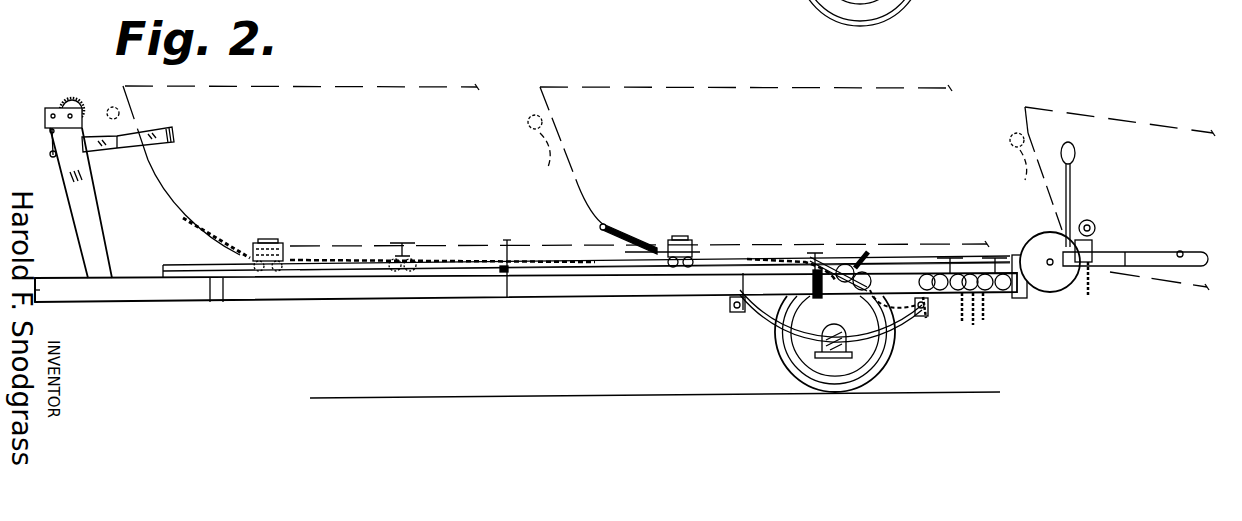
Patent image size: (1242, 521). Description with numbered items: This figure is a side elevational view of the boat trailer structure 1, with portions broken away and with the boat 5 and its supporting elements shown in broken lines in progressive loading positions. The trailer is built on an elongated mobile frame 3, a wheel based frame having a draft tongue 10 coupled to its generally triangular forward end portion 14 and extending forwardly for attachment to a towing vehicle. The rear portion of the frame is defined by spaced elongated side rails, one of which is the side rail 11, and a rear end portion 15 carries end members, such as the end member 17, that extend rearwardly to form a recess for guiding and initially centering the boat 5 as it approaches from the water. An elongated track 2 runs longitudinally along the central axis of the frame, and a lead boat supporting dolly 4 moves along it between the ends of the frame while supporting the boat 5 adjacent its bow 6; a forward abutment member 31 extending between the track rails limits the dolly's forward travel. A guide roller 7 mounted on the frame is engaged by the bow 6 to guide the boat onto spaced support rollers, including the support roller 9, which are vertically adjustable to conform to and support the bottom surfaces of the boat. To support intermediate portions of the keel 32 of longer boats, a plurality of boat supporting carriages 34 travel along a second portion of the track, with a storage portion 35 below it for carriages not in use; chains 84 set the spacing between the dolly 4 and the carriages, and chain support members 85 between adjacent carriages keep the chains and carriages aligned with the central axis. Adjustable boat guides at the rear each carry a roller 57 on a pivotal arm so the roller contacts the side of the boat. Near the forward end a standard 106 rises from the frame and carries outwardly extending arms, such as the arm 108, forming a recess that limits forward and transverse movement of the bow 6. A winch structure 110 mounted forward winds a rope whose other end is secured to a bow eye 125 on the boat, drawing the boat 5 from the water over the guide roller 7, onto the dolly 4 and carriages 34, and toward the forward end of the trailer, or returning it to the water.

The boat trailer structure 1 is at (190, 308).
The elongated track 2 is at (163, 262).
The elongated mobile frame 3 is at (648, 302).
The lead boat supporting dolly 4 is at (266, 230).
The boat 5 is at (282, 80).
The bow 6 is at (146, 173).
The guide roller 7 is at (1032, 235).
The support roller 9 is at (1102, 224).
The draft tongue 10 is at (68, 300).
The side rail 11 is at (396, 290).
The forward end portion 14 is at (358, 302).
The rear end portion 15 is at (1021, 312).
The end member 17 is at (1162, 254).
The forward abutment member 31 is at (235, 258).
The keel 32 is at (313, 244).
The boat supporting carriage 34 is at (410, 245).
The storage portion 35 is at (902, 266).
The roller 57 is at (1082, 154).
The chain 84 is at (400, 242).
The chain support member 85 is at (508, 242).
The standard 106 is at (67, 180).
The arm 108 is at (128, 135).
The winch structure 110 is at (62, 92).
The bow eye 125 is at (110, 110).